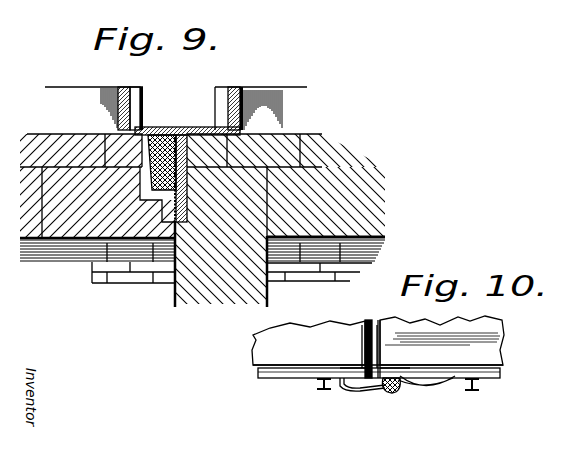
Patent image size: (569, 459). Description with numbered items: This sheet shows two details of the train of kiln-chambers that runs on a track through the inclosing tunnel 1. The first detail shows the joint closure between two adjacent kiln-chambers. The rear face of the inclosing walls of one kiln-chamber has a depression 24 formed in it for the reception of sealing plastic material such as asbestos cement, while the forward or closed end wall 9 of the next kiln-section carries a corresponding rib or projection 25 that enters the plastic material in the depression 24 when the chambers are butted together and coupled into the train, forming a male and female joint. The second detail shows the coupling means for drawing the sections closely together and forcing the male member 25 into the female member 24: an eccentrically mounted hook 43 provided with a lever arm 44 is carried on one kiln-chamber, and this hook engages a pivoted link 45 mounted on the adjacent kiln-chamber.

In FIG. 9, the inclosing tunnel 1 is at (176, 98).
In FIG. 9, the end closure wall 9 is at (280, 237).
In FIG. 9, the depression 24 is at (137, 155).
In FIG. 9, the rib or projection 25 is at (175, 130).
In FIG. 10, the eccentrically mounted hook 43 is at (392, 393).
In FIG. 10, the lever arm 44 is at (428, 388).
In FIG. 10, the pivoted link 45 is at (362, 386).